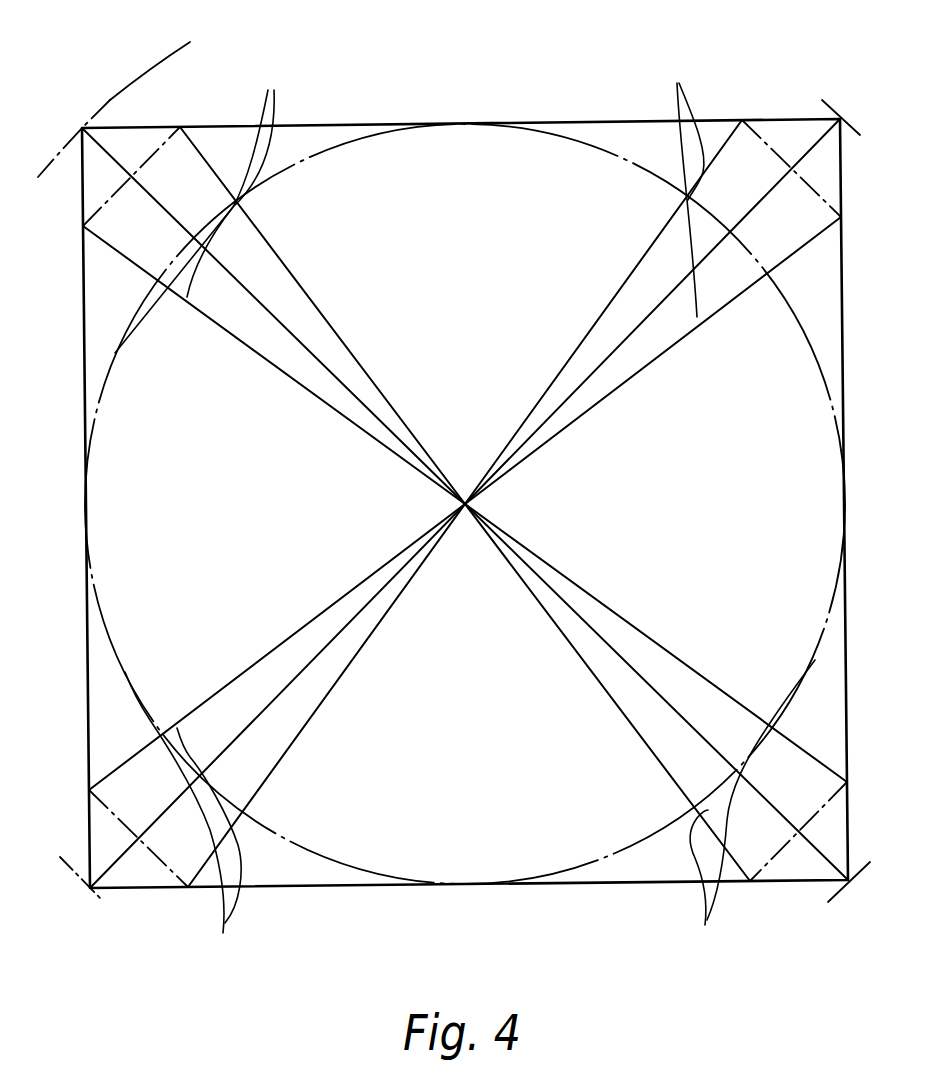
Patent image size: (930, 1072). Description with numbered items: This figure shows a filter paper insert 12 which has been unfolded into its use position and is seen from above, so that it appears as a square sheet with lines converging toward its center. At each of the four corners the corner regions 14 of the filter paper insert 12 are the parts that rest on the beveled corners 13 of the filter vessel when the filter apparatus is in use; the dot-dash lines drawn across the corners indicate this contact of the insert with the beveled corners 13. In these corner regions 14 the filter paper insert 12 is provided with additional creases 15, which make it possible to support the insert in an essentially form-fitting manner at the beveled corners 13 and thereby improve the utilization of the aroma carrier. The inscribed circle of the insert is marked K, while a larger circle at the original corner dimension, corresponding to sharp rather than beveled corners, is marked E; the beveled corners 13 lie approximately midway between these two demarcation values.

The filter paper insert 12 is at (415, 192).
The beveled corners 13 is at (86, 222).
The corner regions 14 is at (168, 220).
The additional creases 15 is at (465, 507).
The circle at the original corner dimension E is at (137, 86).
The inscribed circle K is at (127, 332).